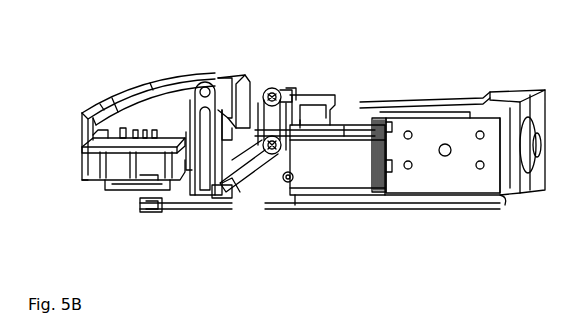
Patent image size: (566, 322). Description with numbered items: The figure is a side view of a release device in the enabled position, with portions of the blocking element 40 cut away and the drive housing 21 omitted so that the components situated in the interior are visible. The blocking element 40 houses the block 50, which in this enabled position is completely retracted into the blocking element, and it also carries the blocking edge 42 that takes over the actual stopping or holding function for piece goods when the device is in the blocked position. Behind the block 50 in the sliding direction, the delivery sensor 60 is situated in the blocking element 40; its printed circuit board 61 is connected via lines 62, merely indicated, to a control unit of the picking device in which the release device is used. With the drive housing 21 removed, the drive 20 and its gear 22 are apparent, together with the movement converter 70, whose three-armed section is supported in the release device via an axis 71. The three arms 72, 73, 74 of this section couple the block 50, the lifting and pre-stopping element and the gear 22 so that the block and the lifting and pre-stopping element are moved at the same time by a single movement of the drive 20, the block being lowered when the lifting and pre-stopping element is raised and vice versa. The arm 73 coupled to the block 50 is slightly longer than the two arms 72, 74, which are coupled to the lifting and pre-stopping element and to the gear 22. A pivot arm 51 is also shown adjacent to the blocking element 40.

The drive 20 is at (422, 115).
The drive housing 21 is at (455, 103).
The gear 22 is at (345, 165).
The blocking element 40 is at (165, 82).
The blocking edge 42 is at (244, 82).
The block 50 is at (218, 206).
The pivot arm 51 is at (215, 80).
The delivery sensor 60 is at (112, 214).
The printed circuit board 61 is at (110, 165).
The lines 62 is at (135, 83).
The movement converter 70 is at (302, 76).
The axis 71 is at (277, 152).
The arm 72 is at (283, 86).
The arm 73 is at (237, 185).
The arm 74 is at (298, 172).